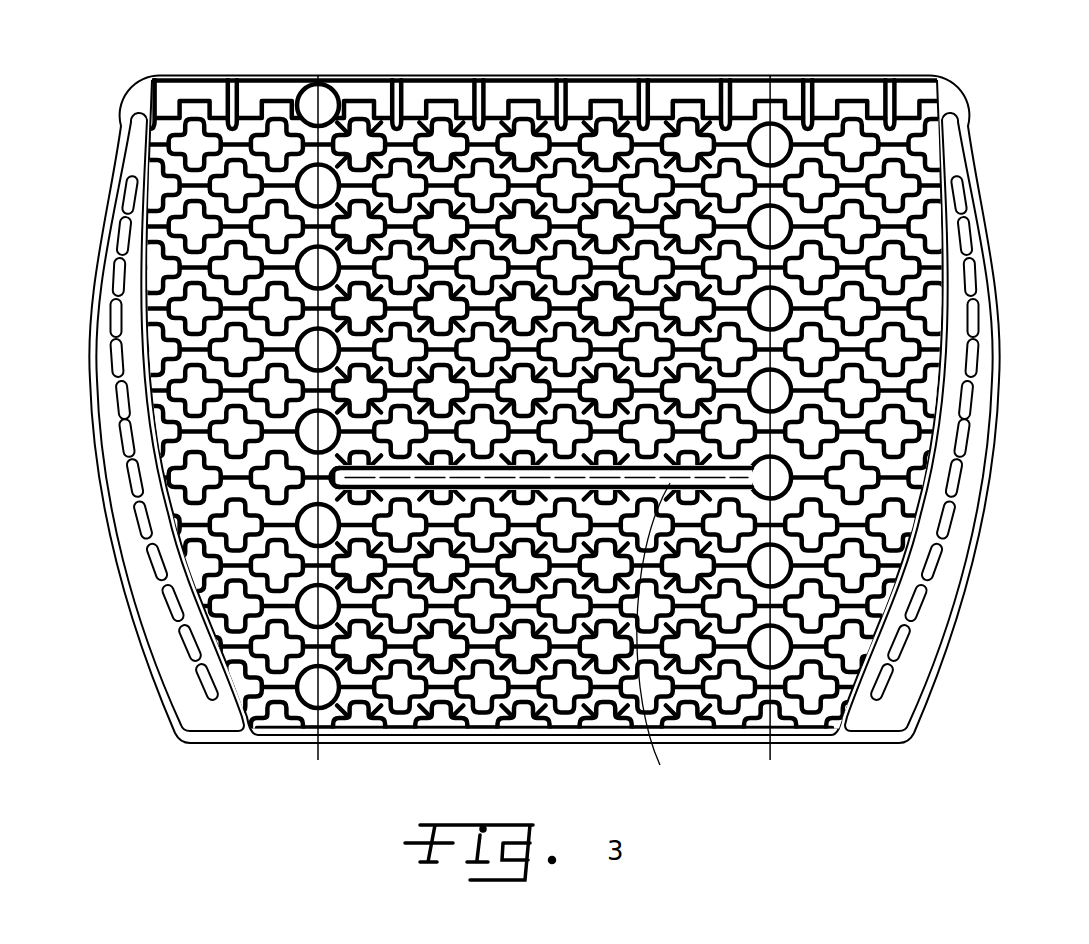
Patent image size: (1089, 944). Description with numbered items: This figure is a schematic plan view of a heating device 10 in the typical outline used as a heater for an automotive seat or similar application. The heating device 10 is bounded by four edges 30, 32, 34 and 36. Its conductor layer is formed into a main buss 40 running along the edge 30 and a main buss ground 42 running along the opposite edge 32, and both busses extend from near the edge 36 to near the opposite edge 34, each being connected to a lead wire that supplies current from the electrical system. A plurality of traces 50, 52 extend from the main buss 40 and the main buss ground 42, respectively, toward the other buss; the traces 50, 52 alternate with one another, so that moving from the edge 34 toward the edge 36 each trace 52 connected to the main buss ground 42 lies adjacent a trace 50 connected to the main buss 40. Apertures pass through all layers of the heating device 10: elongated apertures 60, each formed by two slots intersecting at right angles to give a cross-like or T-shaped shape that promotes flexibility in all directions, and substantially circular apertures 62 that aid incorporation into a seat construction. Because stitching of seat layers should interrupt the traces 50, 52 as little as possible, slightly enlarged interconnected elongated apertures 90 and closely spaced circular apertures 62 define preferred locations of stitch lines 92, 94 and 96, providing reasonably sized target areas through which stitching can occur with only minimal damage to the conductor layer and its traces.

The heating device 10 is at (546, 402).
The edge 30 is at (546, 400).
The edge 32 is at (96, 425).
The edge 34 is at (585, 78).
The edge 36 is at (550, 745).
The main buss 40 is at (945, 528).
The main buss ground 42 is at (135, 550).
The traces 50 is at (940, 152).
The traces 52 is at (228, 92).
The elongated apertures 60 is at (410, 92).
The circular apertures 62 is at (330, 100).
The slightly enlarged interconnected elongated apertures 90 is at (649, 637).
The stitch line 92 is at (776, 758).
The stitch line 94 is at (318, 752).
The stitch line 96 is at (878, 512).